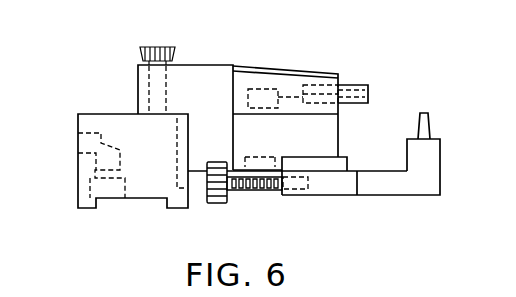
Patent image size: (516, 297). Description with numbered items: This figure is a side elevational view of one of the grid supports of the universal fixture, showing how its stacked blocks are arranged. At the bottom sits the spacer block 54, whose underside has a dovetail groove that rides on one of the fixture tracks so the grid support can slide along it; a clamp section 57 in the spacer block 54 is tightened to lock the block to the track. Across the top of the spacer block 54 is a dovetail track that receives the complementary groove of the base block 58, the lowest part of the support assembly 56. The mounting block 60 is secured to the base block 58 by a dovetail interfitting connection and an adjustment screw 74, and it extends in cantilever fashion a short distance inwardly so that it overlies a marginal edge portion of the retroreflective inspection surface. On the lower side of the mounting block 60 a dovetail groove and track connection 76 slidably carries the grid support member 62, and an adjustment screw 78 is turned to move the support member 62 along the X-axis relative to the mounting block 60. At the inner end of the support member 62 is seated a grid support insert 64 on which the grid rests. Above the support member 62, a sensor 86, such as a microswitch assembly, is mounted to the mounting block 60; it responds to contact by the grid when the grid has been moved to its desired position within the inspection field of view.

The spacer block 54 is at (116, 118).
The clamp section 57 is at (87, 165).
The adjustment screw 74 is at (153, 47).
The base block 58 is at (207, 72).
The mounting block 60 is at (285, 66).
The support assembly 56 is at (297, 90).
The sensor 86 is at (356, 83).
The adjustment screw 78 is at (217, 204).
The dovetail groove and track connection 76 is at (317, 166).
The grid support member 62 is at (387, 187).
The grid support insert 64 is at (431, 127).